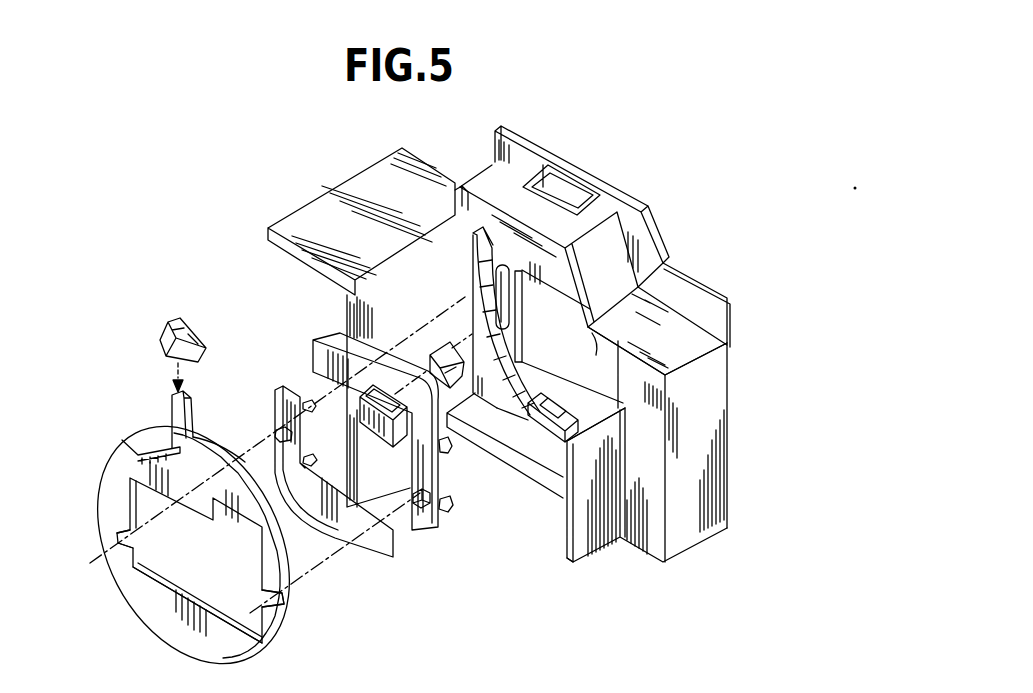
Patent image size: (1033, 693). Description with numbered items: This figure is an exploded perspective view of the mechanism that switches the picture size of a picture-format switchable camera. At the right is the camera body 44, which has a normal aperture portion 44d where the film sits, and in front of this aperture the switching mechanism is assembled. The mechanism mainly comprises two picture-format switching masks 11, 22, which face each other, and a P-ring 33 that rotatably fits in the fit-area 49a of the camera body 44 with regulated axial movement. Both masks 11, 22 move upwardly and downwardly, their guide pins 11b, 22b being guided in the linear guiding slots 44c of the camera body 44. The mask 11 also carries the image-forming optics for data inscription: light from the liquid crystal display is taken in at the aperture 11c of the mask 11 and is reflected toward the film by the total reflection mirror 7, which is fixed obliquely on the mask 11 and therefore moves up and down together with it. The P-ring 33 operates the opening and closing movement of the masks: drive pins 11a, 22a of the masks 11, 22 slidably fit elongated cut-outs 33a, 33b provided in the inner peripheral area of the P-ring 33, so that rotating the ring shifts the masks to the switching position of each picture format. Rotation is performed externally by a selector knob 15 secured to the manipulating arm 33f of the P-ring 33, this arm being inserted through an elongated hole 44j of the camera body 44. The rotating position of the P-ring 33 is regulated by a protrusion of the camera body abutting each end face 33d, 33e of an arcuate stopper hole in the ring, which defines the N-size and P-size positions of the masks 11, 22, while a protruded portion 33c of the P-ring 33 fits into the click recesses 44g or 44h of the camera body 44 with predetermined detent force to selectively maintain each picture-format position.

The camera body 44 is at (325, 212).
The elongated hole 44j is at (557, 202).
The linear guiding slots 44c is at (500, 278).
The aperture 44d is at (660, 272).
The fit-area 49a is at (533, 363).
The click recess 44h is at (516, 457).
The click recess 44g is at (552, 452).
The total reflection mirror 7 is at (432, 352).
The picture-format switching mask 11 is at (327, 360).
The drive pin 11a is at (418, 522).
The guide pin 11b is at (444, 455).
The aperture 11c is at (380, 440).
The picture-format switching mask 22 is at (373, 547).
The drive pin 22a is at (278, 434).
The guide pin 22b is at (307, 404).
The selector knob 15 is at (162, 340).
The P-ring 33 is at (118, 475).
The elongated cut-out 33a is at (278, 610).
The elongated cut-out 33b is at (127, 572).
The protruded portion 33c is at (200, 656).
The end face of arcuate stopper hole 33d is at (204, 455).
The end face of arcuate stopper hole 33e is at (125, 447).
The manipulating arm 33f is at (172, 412).